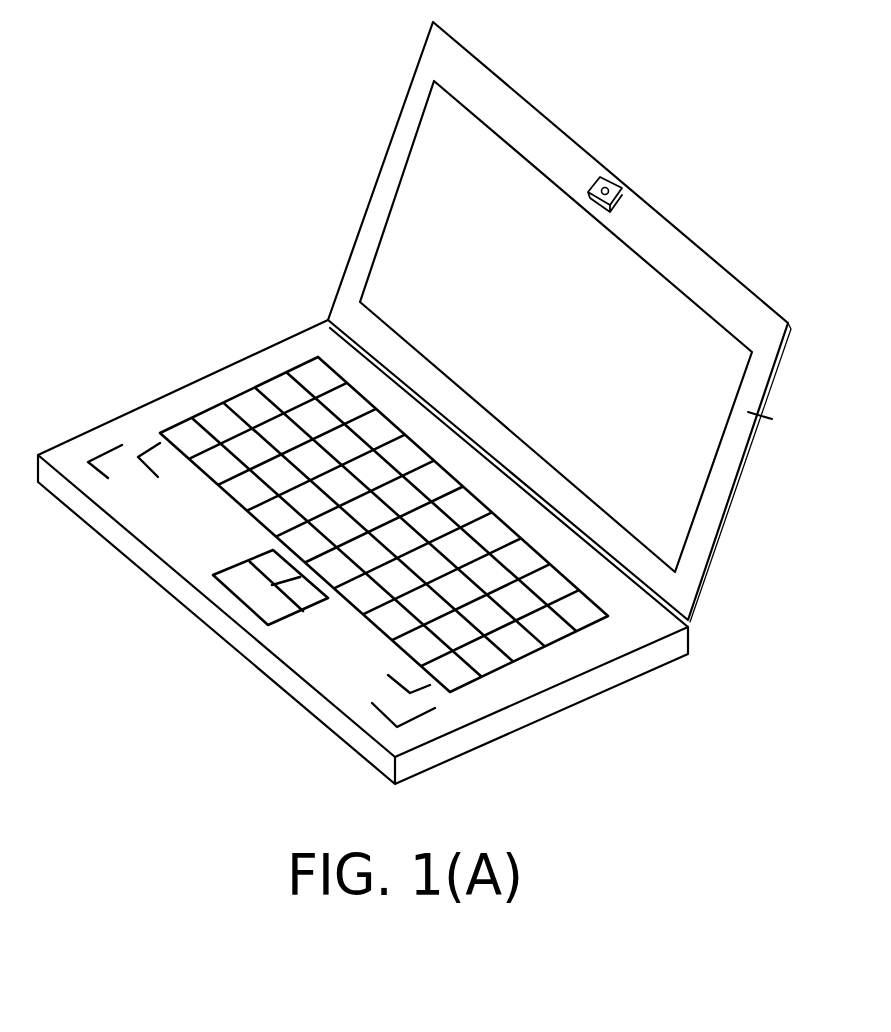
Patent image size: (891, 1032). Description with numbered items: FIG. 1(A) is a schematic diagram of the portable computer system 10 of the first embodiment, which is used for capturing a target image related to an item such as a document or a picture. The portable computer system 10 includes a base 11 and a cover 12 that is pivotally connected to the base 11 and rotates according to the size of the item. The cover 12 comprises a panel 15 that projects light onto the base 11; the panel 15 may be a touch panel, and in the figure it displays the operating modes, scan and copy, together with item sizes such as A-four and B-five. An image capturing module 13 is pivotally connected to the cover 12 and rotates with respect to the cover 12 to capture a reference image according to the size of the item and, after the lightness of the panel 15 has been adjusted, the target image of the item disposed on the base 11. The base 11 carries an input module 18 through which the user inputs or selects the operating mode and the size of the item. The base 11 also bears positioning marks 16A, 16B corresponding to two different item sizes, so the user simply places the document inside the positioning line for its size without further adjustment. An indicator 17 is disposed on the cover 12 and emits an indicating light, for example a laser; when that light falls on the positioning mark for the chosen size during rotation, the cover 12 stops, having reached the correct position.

The portable computer system 10 is at (454, 403).
The base 11 is at (357, 552).
The cover 12 is at (578, 322).
The image capturing module 13 is at (615, 183).
The panel 15 is at (406, 190).
The positioning mark 16A is at (95, 458).
The positioning mark 16B is at (140, 455).
The indicator 17 is at (760, 418).
The input module 18 is at (363, 618).